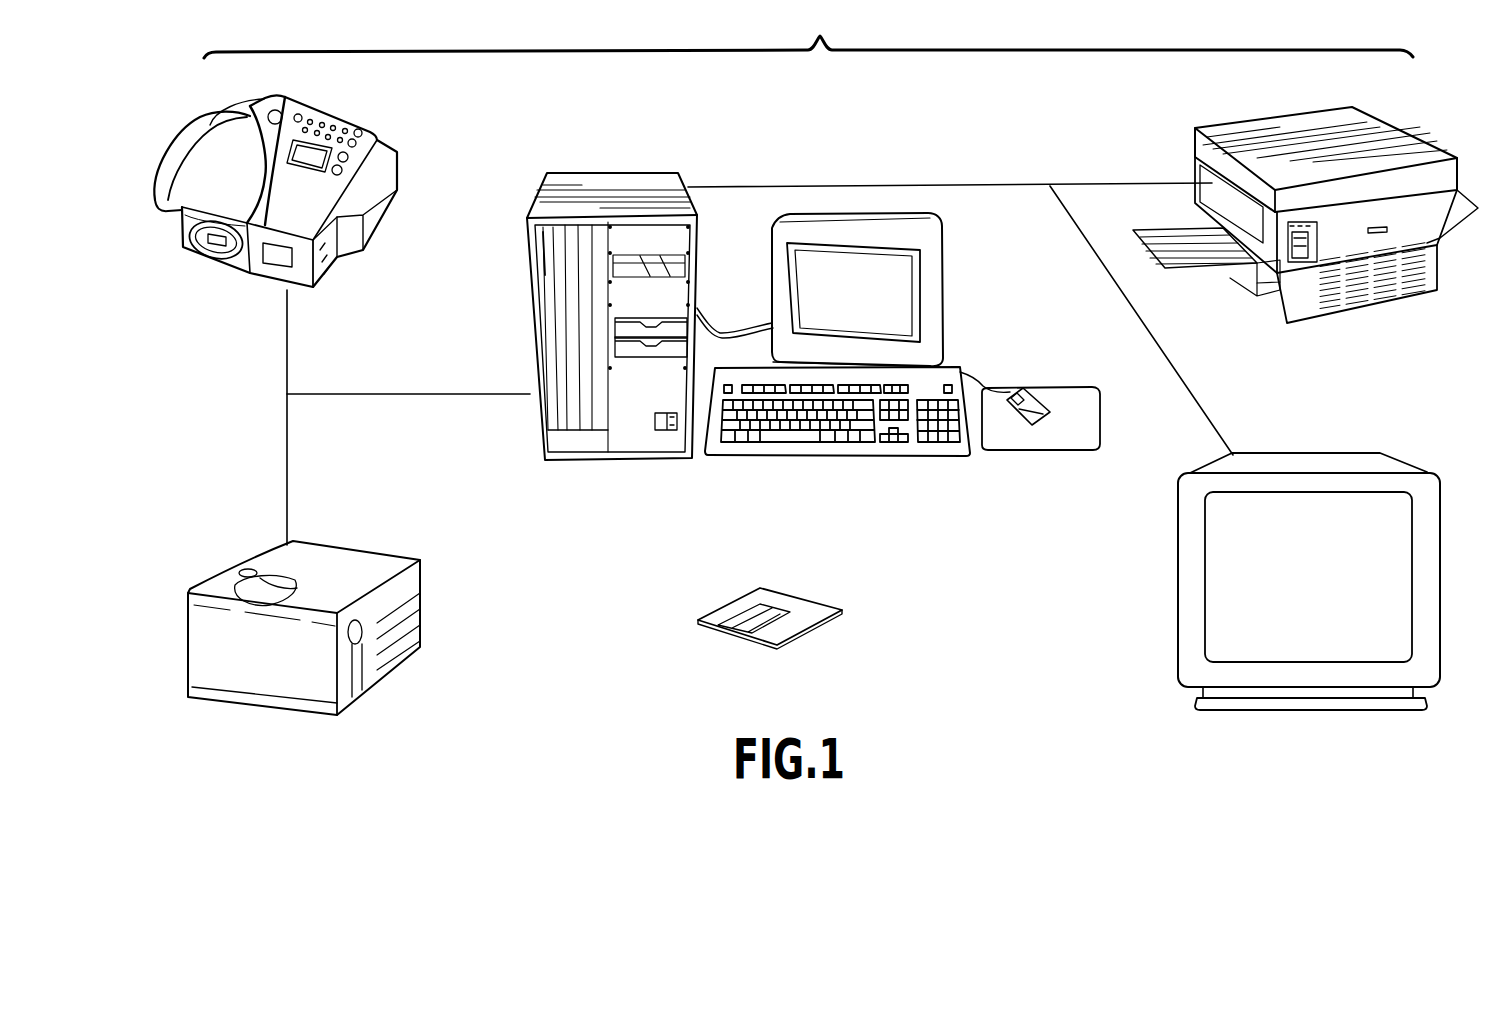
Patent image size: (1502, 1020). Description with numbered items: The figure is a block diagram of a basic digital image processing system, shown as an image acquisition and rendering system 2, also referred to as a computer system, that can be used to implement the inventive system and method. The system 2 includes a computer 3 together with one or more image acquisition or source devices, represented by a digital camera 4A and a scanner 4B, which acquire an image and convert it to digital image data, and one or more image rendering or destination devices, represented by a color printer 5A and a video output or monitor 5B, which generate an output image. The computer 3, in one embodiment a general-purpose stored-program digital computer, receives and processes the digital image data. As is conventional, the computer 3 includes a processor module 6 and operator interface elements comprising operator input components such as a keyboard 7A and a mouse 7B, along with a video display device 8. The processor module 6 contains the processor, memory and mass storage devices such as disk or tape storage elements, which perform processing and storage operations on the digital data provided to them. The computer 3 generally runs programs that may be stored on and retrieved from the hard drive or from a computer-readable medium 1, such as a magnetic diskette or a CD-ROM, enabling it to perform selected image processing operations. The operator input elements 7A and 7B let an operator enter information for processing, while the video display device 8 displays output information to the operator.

The computer-readable medium 1 is at (805, 627).
The image acquisition and rendering system 2 is at (808, 35).
The computer 3 is at (475, 456).
The digital camera 4A is at (372, 125).
The scanner 4B is at (422, 580).
The color printer 5A is at (1273, 115).
The monitor 5B is at (1441, 618).
The processor module 6 is at (610, 172).
The keyboard 7A is at (865, 456).
The mouse 7B is at (1020, 415).
The video display device 8 is at (893, 213).